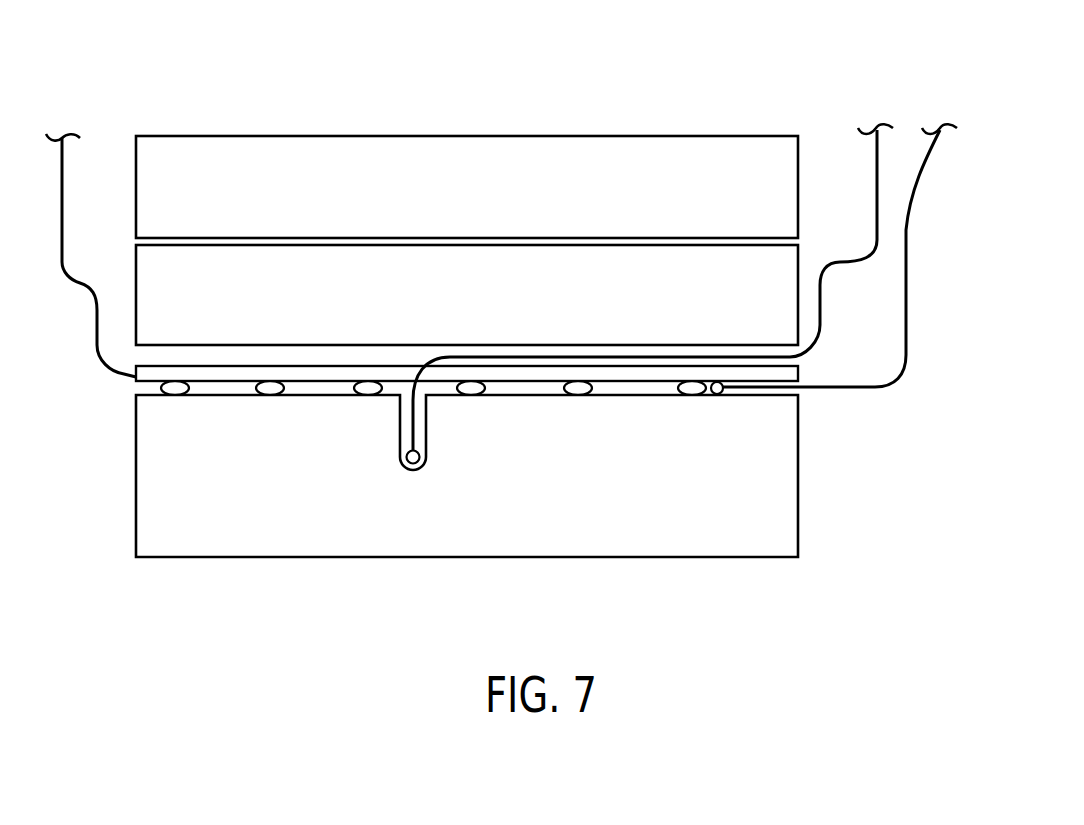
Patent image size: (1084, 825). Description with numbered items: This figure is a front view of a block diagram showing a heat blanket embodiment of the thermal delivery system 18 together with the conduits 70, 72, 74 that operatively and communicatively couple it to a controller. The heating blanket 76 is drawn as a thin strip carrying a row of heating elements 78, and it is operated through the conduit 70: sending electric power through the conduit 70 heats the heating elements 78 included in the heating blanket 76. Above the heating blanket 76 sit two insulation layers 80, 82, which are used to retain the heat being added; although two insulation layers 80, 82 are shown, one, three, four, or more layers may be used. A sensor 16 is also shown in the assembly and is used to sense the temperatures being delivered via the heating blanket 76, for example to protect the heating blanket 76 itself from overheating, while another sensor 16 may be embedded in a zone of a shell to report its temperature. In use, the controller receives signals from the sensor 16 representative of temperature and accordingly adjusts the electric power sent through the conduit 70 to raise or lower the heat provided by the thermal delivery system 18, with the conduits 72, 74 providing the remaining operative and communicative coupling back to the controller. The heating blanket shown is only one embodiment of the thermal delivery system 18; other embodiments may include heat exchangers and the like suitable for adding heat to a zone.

The sensor 16 is at (413, 464).
The thermal delivery system 18 is at (690, 65).
The conduit 70 is at (75, 268).
The conduit 72 is at (876, 178).
The conduit 74 is at (835, 392).
The heating blanket 76 is at (136, 380).
The heating elements 78 is at (186, 386).
The insulation layer 80 is at (482, 201).
The insulation layer 82 is at (482, 308).